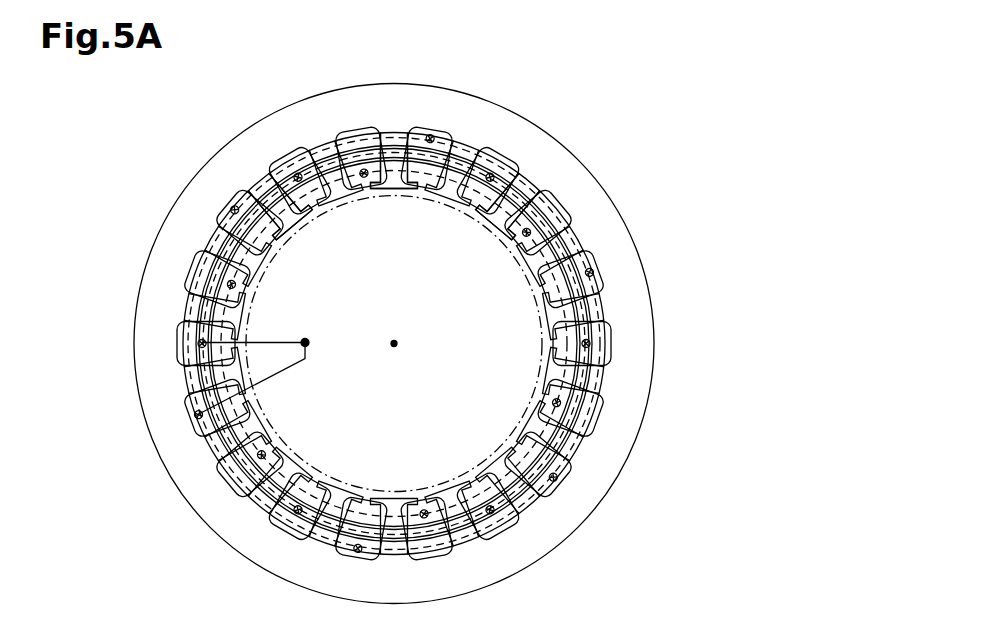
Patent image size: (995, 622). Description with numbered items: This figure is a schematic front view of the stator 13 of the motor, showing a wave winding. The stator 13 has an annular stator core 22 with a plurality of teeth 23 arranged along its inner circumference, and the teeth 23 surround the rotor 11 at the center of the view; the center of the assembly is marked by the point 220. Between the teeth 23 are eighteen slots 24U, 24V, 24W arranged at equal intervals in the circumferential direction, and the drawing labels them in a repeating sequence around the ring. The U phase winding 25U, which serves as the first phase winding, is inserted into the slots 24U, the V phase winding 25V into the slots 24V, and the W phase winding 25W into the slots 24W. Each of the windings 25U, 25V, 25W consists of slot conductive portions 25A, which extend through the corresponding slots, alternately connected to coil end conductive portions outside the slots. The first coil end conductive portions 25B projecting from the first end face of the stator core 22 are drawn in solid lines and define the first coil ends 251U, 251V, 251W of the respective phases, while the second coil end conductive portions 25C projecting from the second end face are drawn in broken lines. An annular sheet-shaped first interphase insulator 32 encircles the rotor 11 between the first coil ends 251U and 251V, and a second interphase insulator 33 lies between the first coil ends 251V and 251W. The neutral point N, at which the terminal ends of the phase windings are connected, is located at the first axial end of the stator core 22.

The stator 13 is at (551, 77).
The stator core 22 is at (640, 385).
The teeth 23 is at (503, 222).
The rotor 11 is at (238, 369).
The slots 24U is at (603, 272).
The slots 24V is at (615, 348).
The slots 24W is at (565, 207).
The U phase winding 25U is at (493, 344).
The V phase winding 25V is at (282, 457).
The W phase winding 25W is at (593, 393).
The slot conductive portions 25A is at (597, 270).
The first coil end conductive portions 25B is at (603, 300).
The second coil end conductive portions 25C is at (580, 240).
The first coil ends 251U is at (392, 135).
The first coil ends 251V is at (260, 190).
The first coil ends 251W is at (480, 212).
The first interphase insulator 32 is at (215, 235).
The second interphase insulator 33 is at (218, 310).
The center axis 220 is at (399, 346).
The neutral point N is at (311, 345).